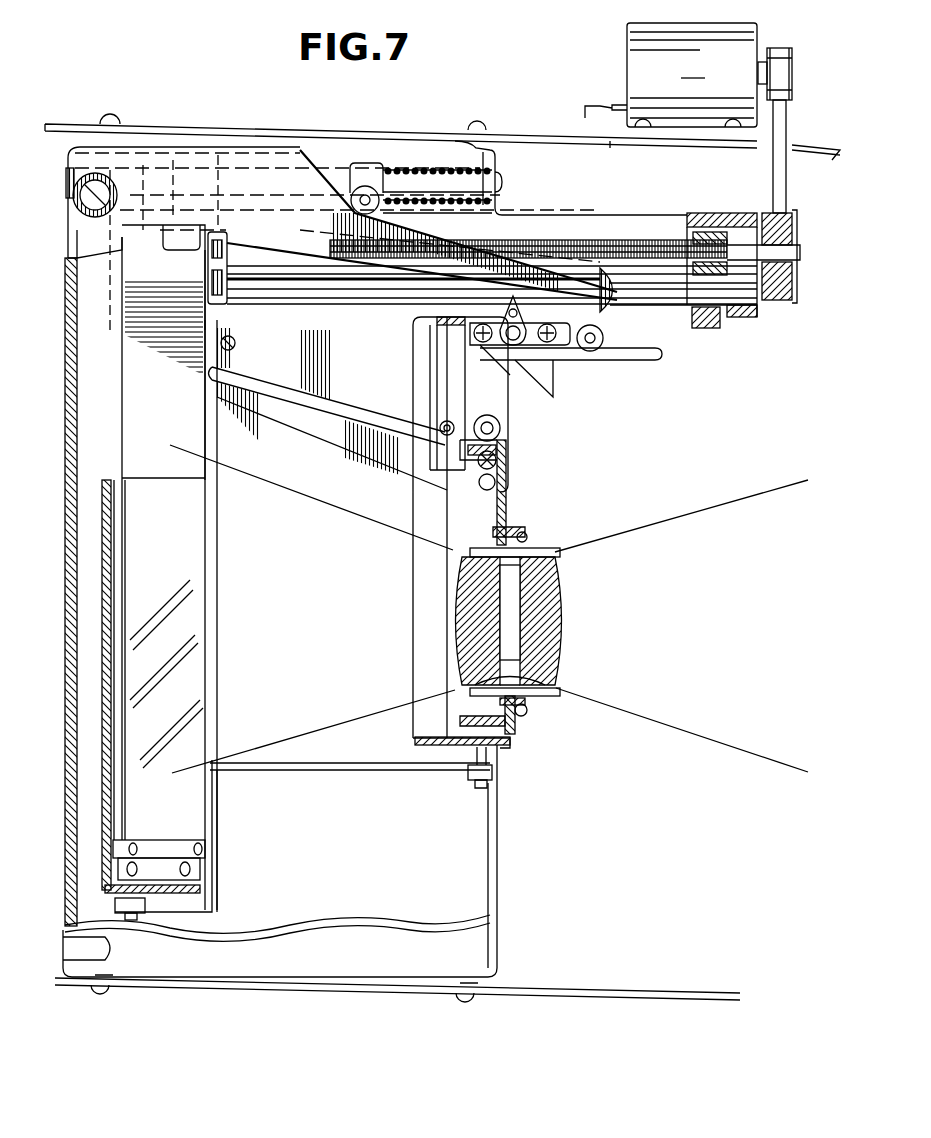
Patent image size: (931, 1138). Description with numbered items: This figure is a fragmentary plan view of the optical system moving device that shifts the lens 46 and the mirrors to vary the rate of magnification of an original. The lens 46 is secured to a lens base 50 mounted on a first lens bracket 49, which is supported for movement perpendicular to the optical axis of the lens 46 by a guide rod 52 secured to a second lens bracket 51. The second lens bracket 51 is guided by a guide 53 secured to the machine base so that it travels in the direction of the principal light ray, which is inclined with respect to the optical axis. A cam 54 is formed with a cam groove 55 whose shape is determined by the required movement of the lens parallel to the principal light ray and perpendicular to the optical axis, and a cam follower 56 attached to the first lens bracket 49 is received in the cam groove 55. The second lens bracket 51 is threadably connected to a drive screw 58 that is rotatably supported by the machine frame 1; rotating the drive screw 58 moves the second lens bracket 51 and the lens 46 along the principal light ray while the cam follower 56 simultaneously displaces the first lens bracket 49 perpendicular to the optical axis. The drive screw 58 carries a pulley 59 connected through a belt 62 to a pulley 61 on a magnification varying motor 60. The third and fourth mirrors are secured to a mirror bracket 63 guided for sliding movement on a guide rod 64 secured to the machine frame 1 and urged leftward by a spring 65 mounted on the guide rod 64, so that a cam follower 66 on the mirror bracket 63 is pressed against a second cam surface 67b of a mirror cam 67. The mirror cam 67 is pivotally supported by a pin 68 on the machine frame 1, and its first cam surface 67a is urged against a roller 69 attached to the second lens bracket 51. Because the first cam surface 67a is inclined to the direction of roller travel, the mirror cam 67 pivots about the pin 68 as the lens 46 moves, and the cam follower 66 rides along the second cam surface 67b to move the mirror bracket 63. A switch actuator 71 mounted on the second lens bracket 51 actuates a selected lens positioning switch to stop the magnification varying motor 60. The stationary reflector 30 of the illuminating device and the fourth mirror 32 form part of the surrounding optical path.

The machine frame 1 is at (218, 897).
The reflector 30 is at (65, 337).
The fourth mirror 32 is at (218, 812).
The lens 46 is at (575, 592).
The first lens bracket 49 is at (445, 705).
The lens base 50 is at (520, 706).
The second lens bracket 51 is at (722, 318).
The guide rod 52 is at (455, 378).
The guide 53 is at (345, 772).
The cam 54 is at (247, 410).
The cam groove 55 is at (252, 375).
The cam follower 56 is at (508, 458).
The drive screw 58 is at (540, 240).
The pulley 59 is at (795, 280).
The magnification varying motor 60 is at (671, 85).
The pulley 61 is at (793, 80).
The belt 62 is at (790, 200).
The mirror bracket 63 is at (200, 882).
The guide rod 64 is at (406, 168).
The spring 65 is at (450, 165).
The cam follower 66 is at (367, 175).
The mirror cam 67 is at (262, 160).
The first cam surface 67a is at (412, 290).
The second cam surface 67b is at (325, 165).
The pin 68 is at (80, 215).
The roller 69 is at (600, 350).
The switch actuator 71 is at (518, 350).